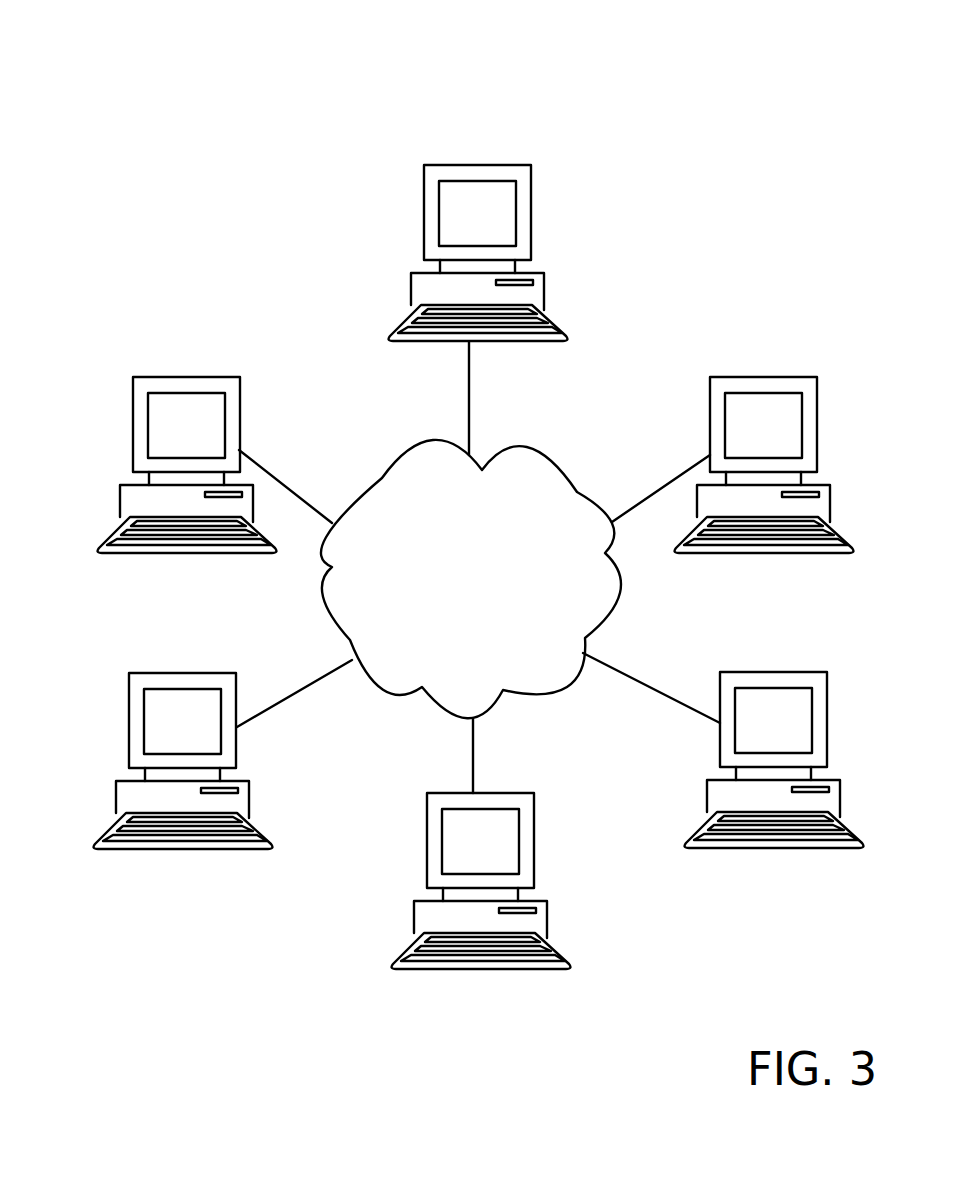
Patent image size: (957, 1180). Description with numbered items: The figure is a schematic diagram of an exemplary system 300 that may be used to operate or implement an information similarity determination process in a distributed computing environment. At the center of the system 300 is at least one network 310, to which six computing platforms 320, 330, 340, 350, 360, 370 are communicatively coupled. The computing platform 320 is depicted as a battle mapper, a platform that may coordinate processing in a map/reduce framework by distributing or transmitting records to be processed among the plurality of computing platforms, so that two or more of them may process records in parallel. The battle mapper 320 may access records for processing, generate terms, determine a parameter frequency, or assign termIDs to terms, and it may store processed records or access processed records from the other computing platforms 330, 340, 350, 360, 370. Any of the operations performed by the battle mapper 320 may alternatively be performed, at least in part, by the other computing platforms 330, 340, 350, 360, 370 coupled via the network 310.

The system 300 is at (127, 120).
The network 310 is at (450, 606).
The computing platform 320 is at (424, 206).
The computing platform 330 is at (817, 422).
The computing platform 340 is at (827, 724).
The computing platform 350 is at (427, 838).
The computing platform 360 is at (129, 713).
The computing platform 370 is at (133, 410).